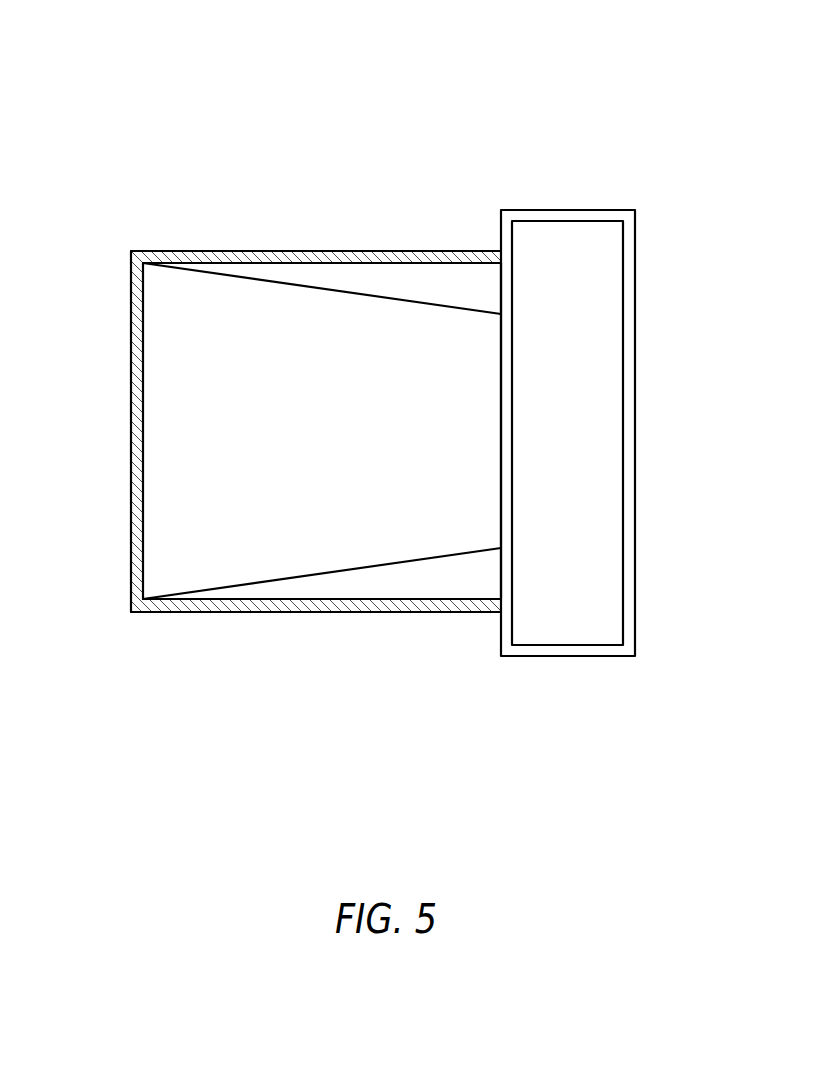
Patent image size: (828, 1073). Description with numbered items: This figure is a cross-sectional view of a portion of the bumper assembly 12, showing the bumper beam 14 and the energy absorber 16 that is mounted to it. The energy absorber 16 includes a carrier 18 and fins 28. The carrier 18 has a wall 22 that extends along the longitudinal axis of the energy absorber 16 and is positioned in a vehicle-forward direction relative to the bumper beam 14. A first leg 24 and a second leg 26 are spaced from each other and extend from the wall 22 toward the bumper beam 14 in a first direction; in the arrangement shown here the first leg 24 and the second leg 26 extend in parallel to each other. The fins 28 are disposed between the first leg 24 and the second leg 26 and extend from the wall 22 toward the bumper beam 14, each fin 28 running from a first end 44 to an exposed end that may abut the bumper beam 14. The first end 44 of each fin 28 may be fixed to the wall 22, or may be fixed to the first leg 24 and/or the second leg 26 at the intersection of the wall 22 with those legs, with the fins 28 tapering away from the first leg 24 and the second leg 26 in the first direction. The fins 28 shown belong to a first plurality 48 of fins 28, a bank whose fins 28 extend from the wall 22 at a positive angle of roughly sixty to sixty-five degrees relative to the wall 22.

The bumper assembly 12 is at (546, 100).
The bumper beam 14 is at (636, 252).
The energy absorber 16 is at (127, 216).
The carrier 18 is at (244, 622).
The wall 22 is at (129, 446).
The first leg 24 is at (336, 251).
The second leg 26 is at (289, 613).
The fin 28 is at (258, 332).
The first end 44 is at (143, 377).
The first plurality of fins 48 is at (500, 440).